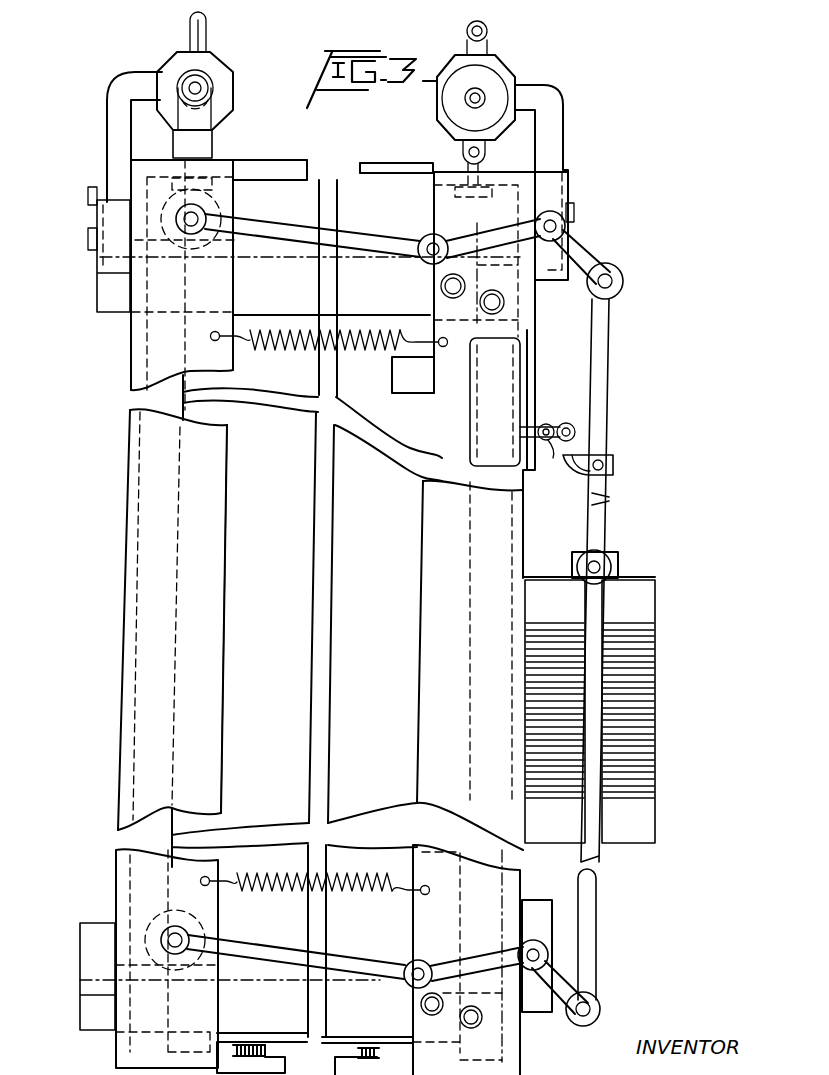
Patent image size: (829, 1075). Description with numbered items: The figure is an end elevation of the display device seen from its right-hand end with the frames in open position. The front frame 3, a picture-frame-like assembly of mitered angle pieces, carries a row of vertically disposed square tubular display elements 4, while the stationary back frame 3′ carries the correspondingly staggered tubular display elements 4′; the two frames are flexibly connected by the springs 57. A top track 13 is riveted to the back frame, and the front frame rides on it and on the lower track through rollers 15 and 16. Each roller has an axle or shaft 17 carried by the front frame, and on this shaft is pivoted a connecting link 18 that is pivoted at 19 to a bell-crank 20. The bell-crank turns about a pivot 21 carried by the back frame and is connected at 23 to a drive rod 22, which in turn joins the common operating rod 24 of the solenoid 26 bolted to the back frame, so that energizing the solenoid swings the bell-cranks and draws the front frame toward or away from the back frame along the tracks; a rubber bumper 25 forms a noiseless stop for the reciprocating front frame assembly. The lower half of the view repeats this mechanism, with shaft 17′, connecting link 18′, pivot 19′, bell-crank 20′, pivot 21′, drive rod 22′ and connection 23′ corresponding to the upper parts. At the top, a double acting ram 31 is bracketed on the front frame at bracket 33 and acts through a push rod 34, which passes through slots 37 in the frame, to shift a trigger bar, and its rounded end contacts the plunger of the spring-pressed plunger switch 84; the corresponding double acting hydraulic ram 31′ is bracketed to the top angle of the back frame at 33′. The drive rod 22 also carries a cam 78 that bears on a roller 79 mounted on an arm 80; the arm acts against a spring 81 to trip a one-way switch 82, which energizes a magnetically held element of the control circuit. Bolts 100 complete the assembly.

The front frame 3 is at (130, 441).
The tubular display elements 4 is at (250, 462).
The rectangular tubular display elements 4′ is at (403, 486).
The back frame 3′ is at (521, 518).
The top track 13 is at (250, 293).
The roller 15 is at (227, 168).
The roller 16 is at (230, 958).
The axle or shaft 17 is at (200, 222).
The axle or shaft 17′ is at (182, 938).
The connecting link 18 is at (360, 240).
The connecting link 18′ is at (338, 966).
The pivot 19 is at (429, 246).
The pivot 19′ is at (410, 968).
The bell-crank 20 is at (505, 240).
The bell-crank 20′ is at (465, 958).
The pivot 21 is at (565, 223).
The pivot 21′ is at (549, 955).
The drive rod 22 is at (611, 372).
The drive rod 22′ is at (600, 890).
The connection 23 is at (612, 282).
The connection 23′ is at (604, 1010).
The common operating rod 24 is at (598, 566).
The rubber bumper 25 is at (100, 266).
The solenoid 26 is at (650, 676).
The double acting ram 31 is at (182, 63).
The double acting hydraulic ram 31′ is at (508, 70).
The bracket arm 33 is at (115, 133).
The bracket 33′ is at (555, 127).
The push rod 34 is at (463, 151).
The slots 37 is at (332, 180).
The springs 57 is at (352, 346).
The cam 78 is at (616, 474).
The roller 79 is at (576, 432).
The arm 80 is at (556, 448).
The spring 81 is at (546, 424).
The one-way switch 82 is at (510, 364).
The spring-pressed plunger switch 84 is at (186, 143).
The bolt 100 is at (480, 302).